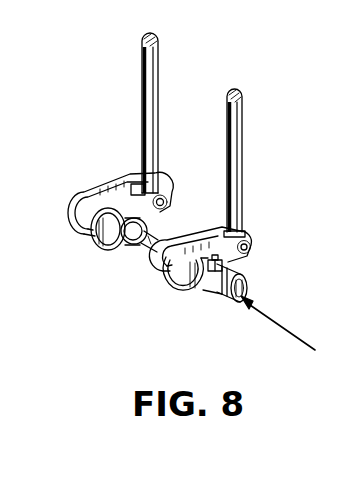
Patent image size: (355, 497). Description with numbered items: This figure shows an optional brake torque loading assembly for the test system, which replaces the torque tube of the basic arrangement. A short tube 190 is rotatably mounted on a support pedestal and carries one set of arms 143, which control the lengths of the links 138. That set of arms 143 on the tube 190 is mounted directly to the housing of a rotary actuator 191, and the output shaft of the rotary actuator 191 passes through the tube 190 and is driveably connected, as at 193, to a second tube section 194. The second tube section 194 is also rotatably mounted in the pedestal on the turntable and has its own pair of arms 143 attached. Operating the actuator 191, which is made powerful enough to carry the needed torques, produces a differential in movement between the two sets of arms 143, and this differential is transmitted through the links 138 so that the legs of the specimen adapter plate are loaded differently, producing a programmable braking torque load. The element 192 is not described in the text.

The links 138 is at (157, 70).
The arms 143 is at (151, 189).
The short tube 190 is at (172, 291).
The rotary actuator 191 is at (217, 305).
The connecting pin 192 is at (158, 230).
The driveable connection 193 is at (128, 252).
The second tube section 194 is at (94, 214).